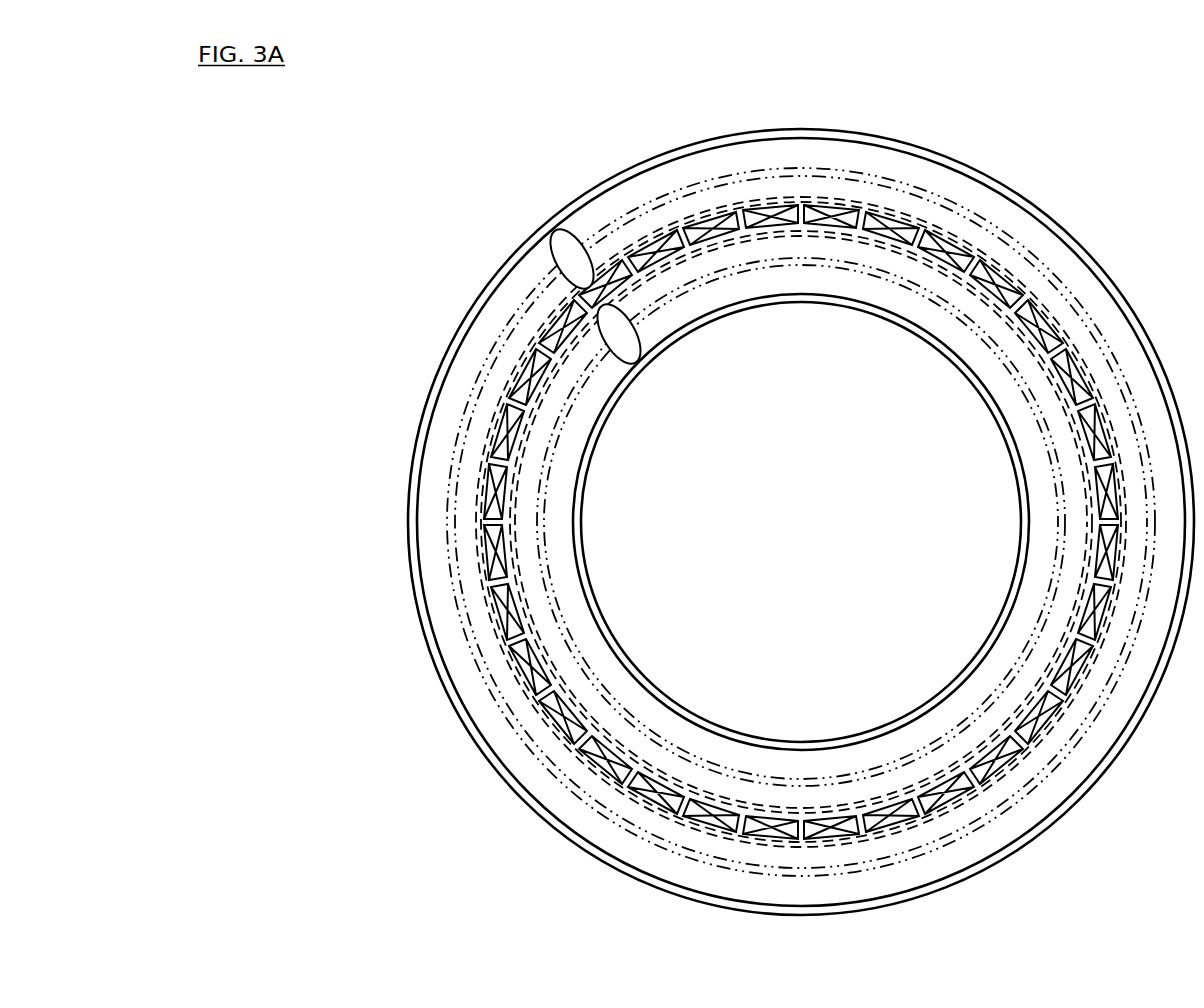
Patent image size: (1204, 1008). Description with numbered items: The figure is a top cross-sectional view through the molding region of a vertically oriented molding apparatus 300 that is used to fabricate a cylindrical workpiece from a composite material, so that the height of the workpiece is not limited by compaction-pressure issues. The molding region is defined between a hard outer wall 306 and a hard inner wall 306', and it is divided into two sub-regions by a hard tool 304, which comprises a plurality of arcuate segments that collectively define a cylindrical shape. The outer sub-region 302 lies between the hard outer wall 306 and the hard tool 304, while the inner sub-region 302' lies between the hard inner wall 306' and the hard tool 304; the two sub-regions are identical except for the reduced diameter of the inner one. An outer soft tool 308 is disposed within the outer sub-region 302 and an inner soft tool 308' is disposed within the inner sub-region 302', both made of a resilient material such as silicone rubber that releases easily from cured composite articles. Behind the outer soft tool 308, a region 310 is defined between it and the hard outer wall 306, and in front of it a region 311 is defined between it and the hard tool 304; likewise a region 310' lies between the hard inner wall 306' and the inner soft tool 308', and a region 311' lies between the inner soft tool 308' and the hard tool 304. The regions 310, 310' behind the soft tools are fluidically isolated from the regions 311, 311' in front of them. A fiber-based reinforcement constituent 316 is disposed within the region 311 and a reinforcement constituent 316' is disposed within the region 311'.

The molding apparatus 300 is at (1070, 187).
The sub-region 302 is at (494, 236).
The sub-region 302' is at (672, 353).
The hard tool 304 is at (533, 368).
The hard outer wall 306 is at (722, 522).
The hard inner wall 306' is at (798, 522).
The soft tool 308 is at (722, 522).
The soft tool 308' is at (800, 522).
The region 310 is at (731, 522).
The region 310' is at (801, 522).
The region 311 is at (728, 522).
The region 311' is at (801, 522).
The reinforcement constituent 316 is at (726, 522).
The reinforcement constituent 316' is at (801, 522).